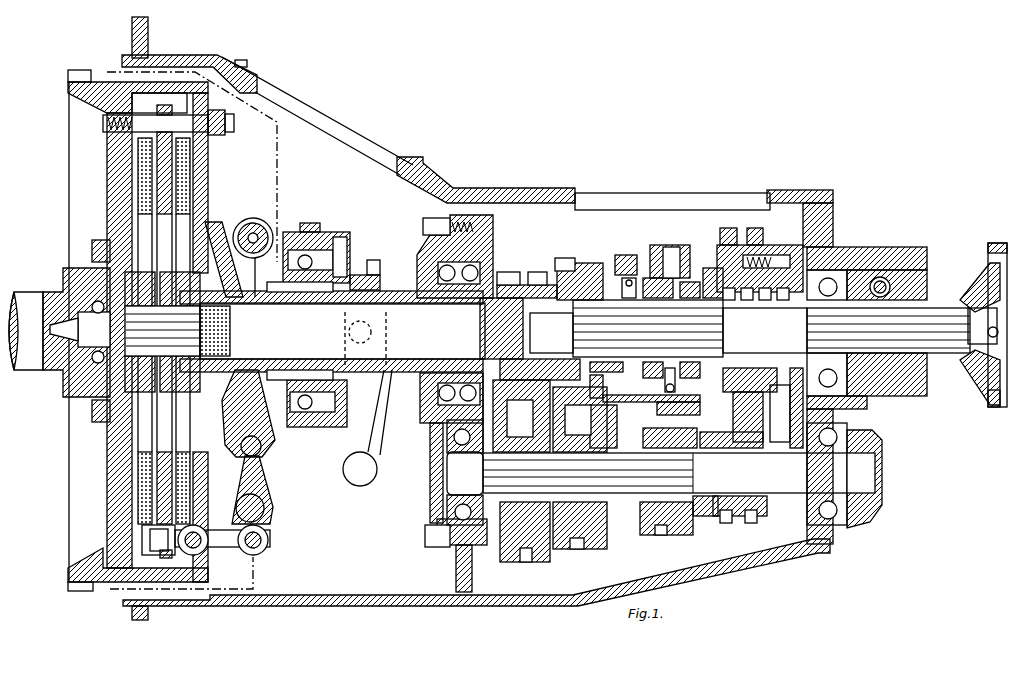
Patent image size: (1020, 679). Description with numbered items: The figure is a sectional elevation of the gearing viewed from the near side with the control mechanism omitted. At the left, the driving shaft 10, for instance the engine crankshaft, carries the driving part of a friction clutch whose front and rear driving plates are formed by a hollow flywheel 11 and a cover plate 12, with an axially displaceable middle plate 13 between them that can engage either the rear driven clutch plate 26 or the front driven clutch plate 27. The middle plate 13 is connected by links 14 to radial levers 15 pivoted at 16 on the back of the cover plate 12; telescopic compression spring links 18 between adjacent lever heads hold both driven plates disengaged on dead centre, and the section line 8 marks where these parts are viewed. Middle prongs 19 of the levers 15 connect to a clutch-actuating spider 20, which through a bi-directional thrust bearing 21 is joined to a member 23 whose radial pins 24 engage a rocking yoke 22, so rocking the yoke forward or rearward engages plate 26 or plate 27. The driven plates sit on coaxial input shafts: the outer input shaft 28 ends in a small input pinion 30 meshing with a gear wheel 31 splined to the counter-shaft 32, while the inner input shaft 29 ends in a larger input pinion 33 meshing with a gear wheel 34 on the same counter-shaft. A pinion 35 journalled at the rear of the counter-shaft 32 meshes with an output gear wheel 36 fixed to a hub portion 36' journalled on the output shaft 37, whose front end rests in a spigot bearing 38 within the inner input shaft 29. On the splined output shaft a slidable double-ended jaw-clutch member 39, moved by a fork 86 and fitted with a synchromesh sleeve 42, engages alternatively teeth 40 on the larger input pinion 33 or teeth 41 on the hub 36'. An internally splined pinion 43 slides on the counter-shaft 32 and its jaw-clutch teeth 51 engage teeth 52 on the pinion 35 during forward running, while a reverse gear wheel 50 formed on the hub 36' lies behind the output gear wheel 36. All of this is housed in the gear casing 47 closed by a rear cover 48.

The section line 8 is at (107, 55).
The driving shaft 10 is at (38, 292).
The hollow flywheel 11 is at (107, 152).
The cover plate 12 is at (208, 149).
The middle plate 13 is at (172, 184).
The links 14 is at (228, 547).
The radial levers 15 is at (268, 492).
The pivot 16 is at (270, 509).
The telescopic compression spring link 18 is at (253, 218).
The middle prongs 19 is at (261, 455).
The clutch-actuating spider 20 is at (270, 444).
The bi-directional thrust bearing 21 is at (305, 427).
The yoke 22 is at (380, 422).
The member 23 is at (318, 230).
The radial pins 24 is at (305, 332).
The rear driven clutch plate 26 is at (192, 199).
The front driven clutch plate 27 is at (140, 180).
The outer input shaft 28 is at (397, 292).
The inner input shaft 29 is at (410, 352).
The small input pinion 30 is at (509, 278).
The gear wheel 31 is at (540, 560).
The counter-shaft 32 is at (453, 477).
The larger input pinion 33 is at (598, 258).
The gear wheel 34 is at (595, 542).
The pinion 35 is at (730, 512).
The output gear wheel 36 is at (760, 329).
The hub portion 36' is at (756, 312).
The output shaft 37 is at (948, 332).
The spigot bearing 38 is at (553, 326).
The slidable double-ended jaw-clutch member 39 is at (653, 278).
The teeth 40 is at (626, 286).
The teeth 41 is at (707, 282).
The sleeve 42 is at (628, 255).
The internally splined pinion 43 is at (653, 525).
The gear casing 47 is at (473, 571).
The rear cover 48 is at (847, 542).
The reverse gear wheel 50 is at (790, 220).
The jaw-clutch teeth 51 is at (700, 512).
The teeth 52 is at (705, 440).
The fork 86 is at (678, 245).